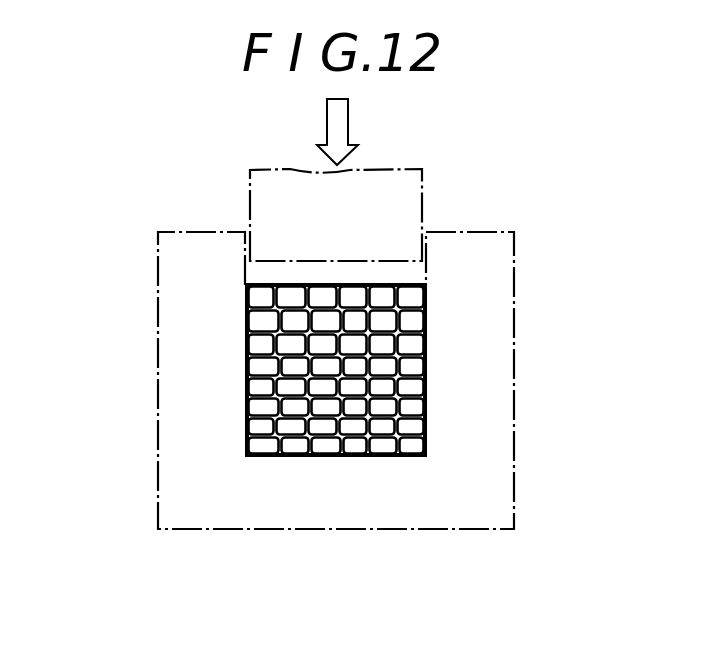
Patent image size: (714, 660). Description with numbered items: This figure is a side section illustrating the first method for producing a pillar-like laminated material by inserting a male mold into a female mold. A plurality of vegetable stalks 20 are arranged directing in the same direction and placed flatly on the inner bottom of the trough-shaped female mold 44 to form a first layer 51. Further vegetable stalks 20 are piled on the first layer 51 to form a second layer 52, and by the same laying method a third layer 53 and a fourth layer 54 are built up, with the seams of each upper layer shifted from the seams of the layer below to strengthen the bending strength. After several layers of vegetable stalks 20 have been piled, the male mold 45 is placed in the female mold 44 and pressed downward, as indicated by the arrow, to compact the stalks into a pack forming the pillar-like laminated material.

The vegetable stalks 20 is at (331, 372).
The female mold 44 is at (158, 320).
The male mold 45 is at (422, 185).
The first layer 51 is at (427, 448).
The second layer 52 is at (427, 425).
The third layer 53 is at (427, 405).
The fourth layer 54 is at (427, 383).